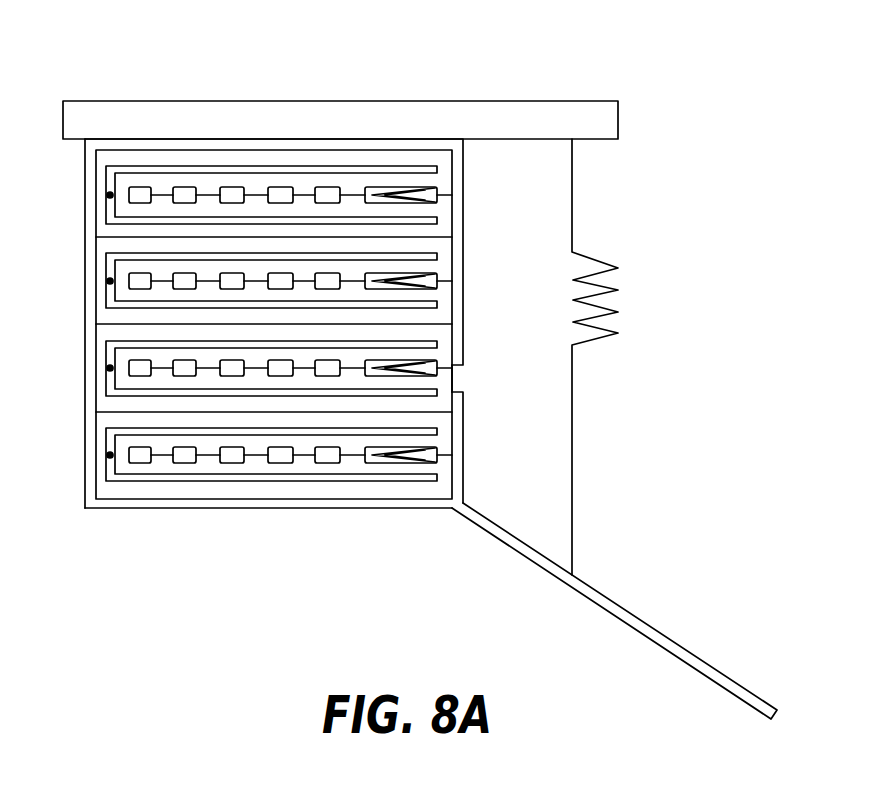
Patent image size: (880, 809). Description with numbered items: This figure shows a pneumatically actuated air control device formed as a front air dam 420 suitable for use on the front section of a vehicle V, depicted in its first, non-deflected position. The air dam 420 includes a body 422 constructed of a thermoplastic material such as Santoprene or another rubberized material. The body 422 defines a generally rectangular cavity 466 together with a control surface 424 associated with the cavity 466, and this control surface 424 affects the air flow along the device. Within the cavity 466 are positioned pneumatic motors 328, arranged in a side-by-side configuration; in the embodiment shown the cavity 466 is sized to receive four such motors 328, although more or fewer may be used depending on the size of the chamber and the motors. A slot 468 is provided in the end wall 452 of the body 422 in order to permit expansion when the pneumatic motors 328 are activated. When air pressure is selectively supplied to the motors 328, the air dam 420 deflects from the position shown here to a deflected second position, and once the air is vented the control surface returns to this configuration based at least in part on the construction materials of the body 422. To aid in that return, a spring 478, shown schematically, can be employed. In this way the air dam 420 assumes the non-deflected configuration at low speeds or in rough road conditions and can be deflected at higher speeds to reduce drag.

The vehicle V is at (182, 108).
The pneumatic motor 328 is at (377, 160).
The air dam 420 is at (77, 312).
The body 422 is at (85, 195).
The control surface 424 is at (627, 625).
The end wall 452 is at (463, 228).
The cavity 466 is at (104, 446).
The slot 468 is at (457, 380).
The spring 478 is at (592, 257).